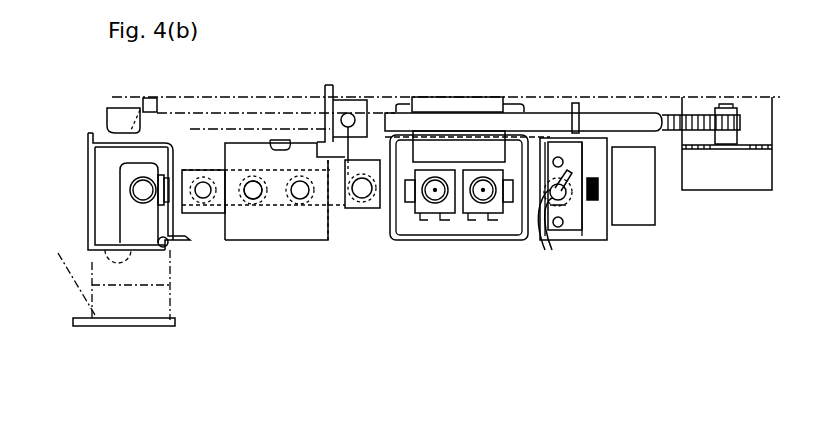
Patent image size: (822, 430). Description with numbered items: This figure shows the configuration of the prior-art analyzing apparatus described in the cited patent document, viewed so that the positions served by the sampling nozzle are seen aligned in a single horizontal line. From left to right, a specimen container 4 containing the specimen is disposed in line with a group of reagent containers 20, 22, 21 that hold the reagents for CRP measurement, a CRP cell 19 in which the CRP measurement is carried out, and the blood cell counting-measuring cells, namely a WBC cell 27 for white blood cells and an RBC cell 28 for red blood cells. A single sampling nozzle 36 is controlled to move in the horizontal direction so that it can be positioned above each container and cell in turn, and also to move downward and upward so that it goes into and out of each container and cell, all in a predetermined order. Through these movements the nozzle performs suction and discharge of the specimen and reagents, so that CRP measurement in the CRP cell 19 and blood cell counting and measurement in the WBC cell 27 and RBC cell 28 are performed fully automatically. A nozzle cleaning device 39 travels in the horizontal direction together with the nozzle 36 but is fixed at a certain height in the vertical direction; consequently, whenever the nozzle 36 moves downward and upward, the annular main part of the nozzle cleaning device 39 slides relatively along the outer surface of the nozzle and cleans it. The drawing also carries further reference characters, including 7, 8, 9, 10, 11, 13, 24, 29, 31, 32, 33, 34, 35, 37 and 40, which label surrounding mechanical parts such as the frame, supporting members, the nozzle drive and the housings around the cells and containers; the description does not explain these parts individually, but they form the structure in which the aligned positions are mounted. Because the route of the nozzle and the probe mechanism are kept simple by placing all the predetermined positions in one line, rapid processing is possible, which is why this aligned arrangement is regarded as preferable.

The specimen container 4 is at (120, 182).
The bracket 7 is at (85, 237).
The fastener 8 is at (168, 245).
The inspection apparatus 9 is at (66, 361).
The first terminal block 10 is at (297, 275).
The relay module 11 is at (444, 275).
The switch module 13 is at (591, 253).
The CRP cell 19 is at (359, 210).
The reagent container 20 is at (209, 214).
The reagent container 21 is at (302, 206).
The reagent container 22 is at (256, 206).
The terminal 24 is at (250, 206).
The WBC cell 27 is at (422, 216).
The RBC cell 28 is at (470, 216).
The switch panel 29 is at (566, 235).
The gear 31 is at (690, 116).
The pin 32 is at (573, 104).
The motor housing 33 is at (750, 192).
The bracket 34 is at (386, 125).
The rail 35 is at (447, 103).
The sampling nozzle 36 is at (553, 232).
The knob 37 is at (596, 176).
The nozzle cleaning device 39 is at (543, 205).
The box 40 is at (633, 228).